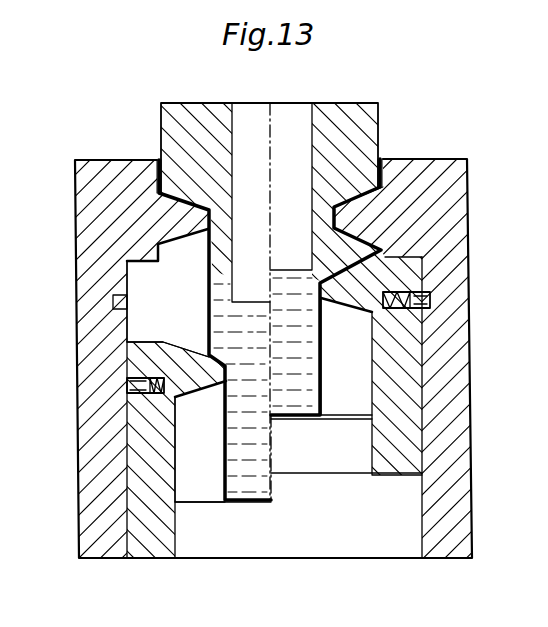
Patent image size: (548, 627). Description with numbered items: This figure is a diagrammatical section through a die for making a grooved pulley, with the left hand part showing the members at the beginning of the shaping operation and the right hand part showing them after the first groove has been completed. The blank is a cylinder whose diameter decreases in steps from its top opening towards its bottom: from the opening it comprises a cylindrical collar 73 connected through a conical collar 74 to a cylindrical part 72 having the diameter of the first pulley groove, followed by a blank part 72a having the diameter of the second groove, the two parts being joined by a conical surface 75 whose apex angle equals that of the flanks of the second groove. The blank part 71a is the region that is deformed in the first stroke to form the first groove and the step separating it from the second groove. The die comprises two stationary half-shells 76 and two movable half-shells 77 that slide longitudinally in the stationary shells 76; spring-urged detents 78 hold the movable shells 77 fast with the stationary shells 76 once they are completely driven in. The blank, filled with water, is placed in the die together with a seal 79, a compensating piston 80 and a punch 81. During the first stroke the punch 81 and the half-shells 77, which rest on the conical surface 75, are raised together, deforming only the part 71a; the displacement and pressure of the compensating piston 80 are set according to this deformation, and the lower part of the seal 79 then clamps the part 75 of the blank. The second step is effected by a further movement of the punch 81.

The blank part 71a is at (378, 251).
The cylindrical part 72 is at (207, 322).
The blank part 72a is at (322, 368).
The cylindrical collar 73 is at (157, 172).
The conical collar 74 is at (168, 236).
The conical surface 75 is at (213, 375).
The stationary half-shells 76 is at (447, 193).
The movable half-shells 77 is at (150, 525).
The spring-urged detents 78 is at (430, 300).
The seal 79 is at (358, 133).
The compensating piston 80 is at (284, 110).
The punch 81 is at (253, 548).